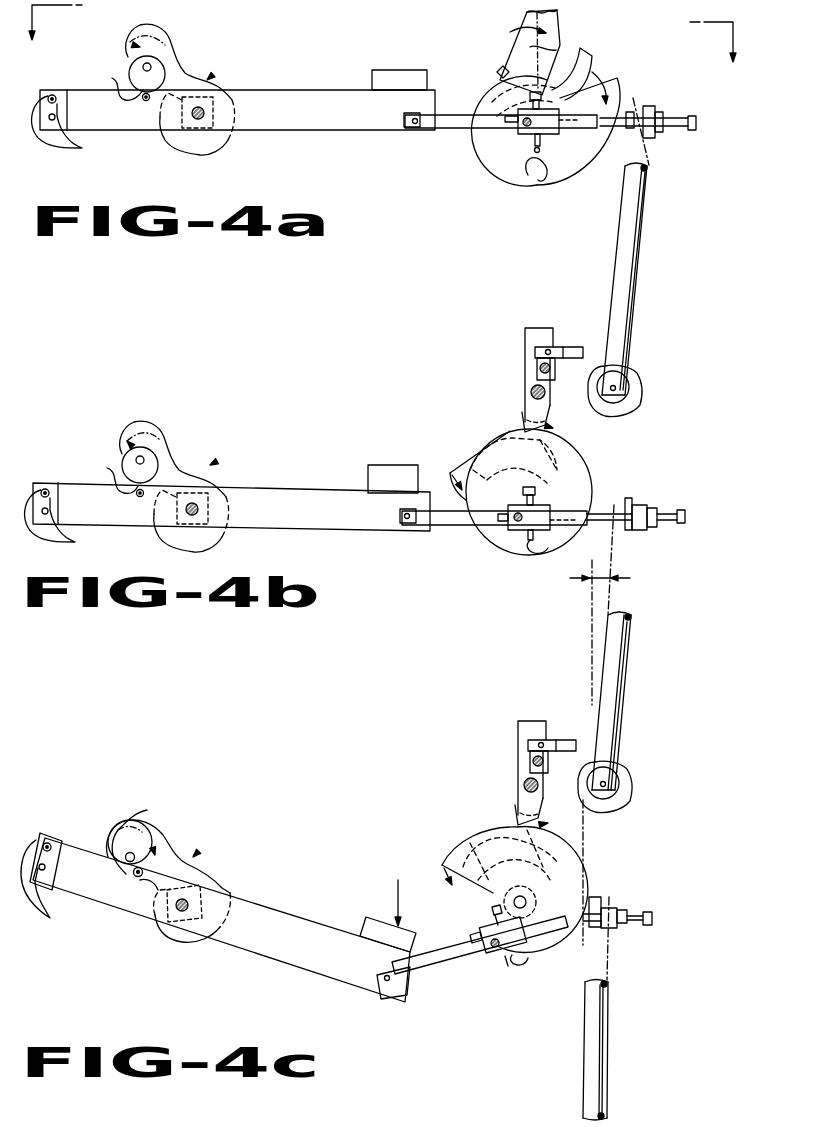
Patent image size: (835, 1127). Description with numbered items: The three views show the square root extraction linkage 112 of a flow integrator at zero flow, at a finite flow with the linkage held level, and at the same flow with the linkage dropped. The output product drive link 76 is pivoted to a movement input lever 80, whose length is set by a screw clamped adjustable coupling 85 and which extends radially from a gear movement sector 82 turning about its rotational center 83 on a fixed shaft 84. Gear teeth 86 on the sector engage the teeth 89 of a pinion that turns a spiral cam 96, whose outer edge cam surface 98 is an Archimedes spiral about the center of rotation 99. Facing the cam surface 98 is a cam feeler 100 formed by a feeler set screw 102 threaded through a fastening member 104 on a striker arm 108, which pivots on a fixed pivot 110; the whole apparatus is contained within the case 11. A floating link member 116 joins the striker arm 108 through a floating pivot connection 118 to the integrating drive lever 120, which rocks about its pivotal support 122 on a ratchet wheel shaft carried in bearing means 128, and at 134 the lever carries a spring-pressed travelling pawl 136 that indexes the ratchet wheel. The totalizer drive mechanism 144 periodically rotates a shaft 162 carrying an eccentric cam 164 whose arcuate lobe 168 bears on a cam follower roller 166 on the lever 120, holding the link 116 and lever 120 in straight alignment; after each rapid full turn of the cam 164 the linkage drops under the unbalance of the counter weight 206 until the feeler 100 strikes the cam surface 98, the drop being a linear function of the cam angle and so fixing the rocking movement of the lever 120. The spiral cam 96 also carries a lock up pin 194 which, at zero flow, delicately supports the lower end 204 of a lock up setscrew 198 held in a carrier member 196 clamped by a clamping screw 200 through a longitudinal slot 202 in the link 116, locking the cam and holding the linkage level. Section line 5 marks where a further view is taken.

In FIG. 4A, the section line 5- 5 is at (382, 33).
In FIG. 4A, the case 11 is at (638, 407).
In FIG. 4B, the case 11 is at (633, 803).
In FIG. 4C, the case 11 is at (633, 803).
In FIG. 4B, the output product drive link 76 is at (577, 347).
In FIG. 4C, the output product drive link 76 is at (567, 740).
In FIG. 4B, the movement input lever 80 is at (540, 328).
In FIG. 4C, the movement input lever 80 is at (547, 719).
In FIG. 4A, the gear movement sector 82 is at (560, 62).
In FIG. 4B, the rotational center 83 is at (537, 397).
In FIG. 4C, the rotational center 83 is at (527, 793).
In FIG. 4B, the fixed shaft 84 is at (530, 392).
In FIG. 4C, the fixed shaft 84 is at (522, 785).
In FIG. 4B, the screw clamped adjustable coupling 85 is at (535, 370).
In FIG. 4C, the screw clamped adjustable coupling 85 is at (532, 753).
In FIG. 4A, the gear teeth 86 is at (590, 70).
In FIG. 4A, the teeth of cam drive pinion 89 is at (496, 94).
In FIG. 4A, the spiral cam 96 is at (573, 168).
In FIG. 4B, the spiral cam 96 is at (578, 498).
In FIG. 4A, the outer edge cam surface 98 is at (620, 100).
In FIG. 4B, the outer edge cam surface 98 is at (582, 458).
In FIG. 4C, the outer edge cam surface 98 is at (585, 880).
In FIG. 4C, the center of rotation 99 is at (513, 902).
In FIG. 4A, the cam feeler 100 is at (647, 108).
In FIG. 4B, the cam feeler 100 is at (612, 530).
In FIG. 4C, the cam feeler 100 is at (600, 899).
In FIG. 4A, the feeler set screw 102 is at (675, 128).
In FIG. 4B, the feeler set screw 102 is at (660, 514).
In FIG. 4C, the feeler set screw 102 is at (653, 916).
In FIG. 4A, the fastening member 104 is at (670, 113).
In FIG. 4B, the fastening member 104 is at (647, 504).
In FIG. 4C, the fastening member 104 is at (630, 905).
In FIG. 4A, the striker arm 108 is at (638, 203).
In FIG. 4B, the striker arm 108 is at (617, 680).
In FIG. 4C, the striker arm 108 is at (600, 1022).
In FIG. 4A, the fixed pivot 110 is at (620, 387).
In FIG. 4B, the fixed pivot 110 is at (612, 783).
In FIG. 4C, the fixed pivot 110 is at (613, 783).
In FIG. 4A, the square root extraction linkage 112 is at (471, 51).
In FIG. 4A, the floating link member 116 is at (460, 136).
In FIG. 4B, the floating link member 116 is at (460, 528).
In FIG. 4C, the floating link member 116 is at (460, 968).
In FIG. 4A, the floating pivot connection 118 is at (403, 120).
In FIG. 4B, the floating pivot connection 118 is at (407, 527).
In FIG. 4C, the floating pivot connection 118 is at (402, 990).
In FIG. 4A, the integrating drive lever 120 is at (298, 104).
In FIG. 4B, the integrating drive lever 120 is at (285, 502).
In FIG. 4C, the integrating drive lever 120 is at (310, 938).
In FIG. 4A, the pivotal support 122 is at (178, 140).
In FIG. 4B, the pivotal support 122 is at (173, 533).
In FIG. 4C, the pivotal support 122 is at (165, 940).
In FIG. 4A, the bearing means 128 is at (234, 104).
In FIG. 4B, the bearing means 128 is at (233, 490).
In FIG. 4C, the bearing means 128 is at (253, 880).
In FIG. 4A, the pawl pivot 134 is at (71, 95).
In FIG. 4B, the pawl pivot 134 is at (72, 488).
In FIG. 4C, the pawl pivot 134 is at (65, 840).
In FIG. 4A, the spring-pressed travelling pawl 136 is at (68, 147).
In FIG. 4B, the spring-pressed travelling pawl 136 is at (56, 534).
In FIG. 4C, the spring-pressed travelling pawl 136 is at (50, 903).
In FIG. 4A, the totalizer drive mechanism 144 is at (209, 78).
In FIG. 4B, the totalizer drive mechanism 144 is at (212, 464).
In FIG. 4C, the totalizer drive mechanism 144 is at (195, 855).
In FIG. 4A, the shaft 162 is at (165, 70).
In FIG. 4B, the shaft 162 is at (158, 458).
In FIG. 4C, the shaft 162 is at (128, 853).
In FIG. 4A, the eccentric cam 164 is at (138, 48).
In FIG. 4B, the eccentric cam 164 is at (152, 474).
In FIG. 4C, the eccentric cam 164 is at (153, 847).
In FIG. 4A, the cam follower roller 166 is at (142, 102).
In FIG. 4B, the cam follower roller 166 is at (138, 497).
In FIG. 4C, the cam follower roller 166 is at (133, 874).
In FIG. 4A, the arcuate lobe 168 is at (110, 84).
In FIG. 4B, the arcuate lobe 168 is at (105, 477).
In FIG. 4C, the arcuate lobe 168 is at (142, 836).
In FIG. 4A, the lock up pin 194 is at (537, 168).
In FIG. 4B, the lock up pin 194 is at (587, 478).
In FIG. 4C, the lock up pin 194 is at (548, 883).
In FIG. 4A, the carrier member 196 is at (530, 143).
In FIG. 4B, the carrier member 196 is at (542, 545).
In FIG. 4C, the carrier member 196 is at (517, 947).
In FIG. 4A, the lock up setscrew 198 is at (532, 152).
In FIG. 4B, the lock up setscrew 198 is at (540, 542).
In FIG. 4C, the lock up setscrew 198 is at (512, 953).
In FIG. 4A, the clamping screw 200 is at (524, 130).
In FIG. 4B, the clamping screw 200 is at (510, 529).
In FIG. 4C, the clamping screw 200 is at (500, 950).
In FIG. 4A, the longitudinal slot 202 is at (512, 120).
In FIG. 4B, the longitudinal slot 202 is at (508, 512).
In FIG. 4C, the longitudinal slot 202 is at (482, 938).
In FIG. 4A, the lower end of lock up setscrew 204 is at (516, 175).
In FIG. 4A, the counter weight 206 is at (453, 50).
In FIG. 4B, the counter weight 206 is at (435, 453).
In FIG. 4C, the counter weight 206 is at (378, 903).